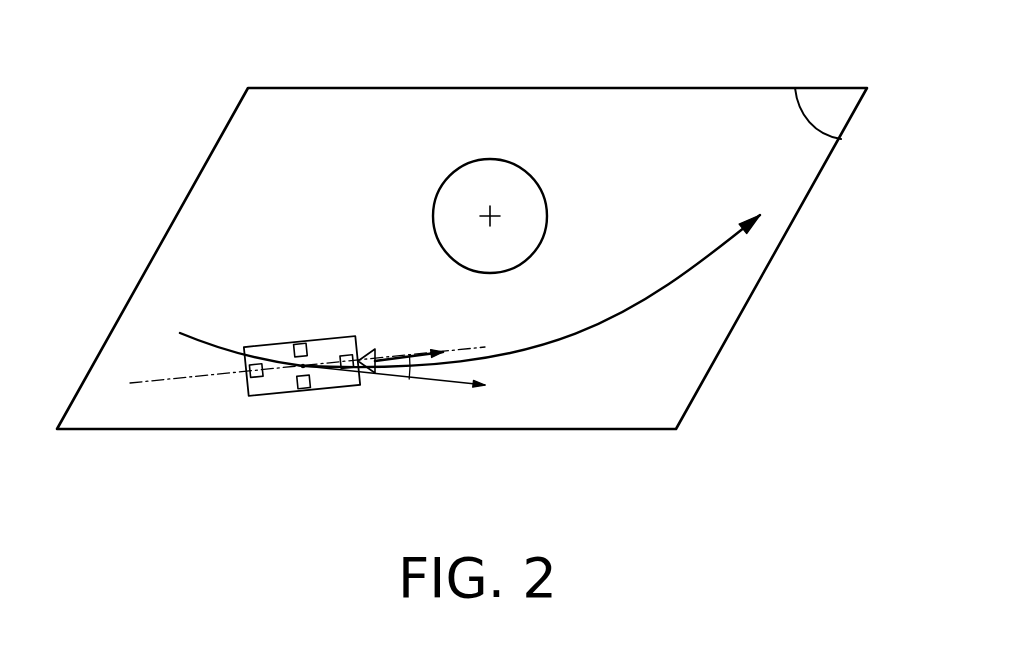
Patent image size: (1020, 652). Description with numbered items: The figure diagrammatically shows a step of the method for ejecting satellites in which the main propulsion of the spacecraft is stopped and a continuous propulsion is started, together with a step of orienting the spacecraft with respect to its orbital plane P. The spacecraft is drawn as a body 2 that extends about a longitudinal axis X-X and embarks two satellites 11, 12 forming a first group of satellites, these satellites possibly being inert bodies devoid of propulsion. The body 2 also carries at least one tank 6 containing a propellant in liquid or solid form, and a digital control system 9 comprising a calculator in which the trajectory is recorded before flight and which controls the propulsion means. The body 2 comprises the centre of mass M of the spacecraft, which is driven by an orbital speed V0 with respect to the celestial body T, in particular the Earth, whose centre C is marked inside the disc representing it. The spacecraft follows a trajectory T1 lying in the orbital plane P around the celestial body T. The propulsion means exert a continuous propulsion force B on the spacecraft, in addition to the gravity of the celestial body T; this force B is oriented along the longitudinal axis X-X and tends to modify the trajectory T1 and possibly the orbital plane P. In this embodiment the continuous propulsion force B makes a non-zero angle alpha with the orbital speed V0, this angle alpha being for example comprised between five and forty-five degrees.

The body 2 is at (260, 385).
The tank 6 is at (348, 354).
The digital control system 9 is at (247, 375).
The satellite 11 is at (305, 343).
The satellite 12 is at (310, 390).
The centre of mass M is at (303, 366).
The continuous propulsion force B is at (415, 352).
The center of target C is at (482, 212).
The celestial body T is at (522, 190).
The trajectory T1 is at (623, 312).
The orbital plane P is at (827, 102).
The longitudinal axis X-X is at (132, 382).
The orbital speed V0 is at (460, 387).
The angle alpha is at (409, 379).